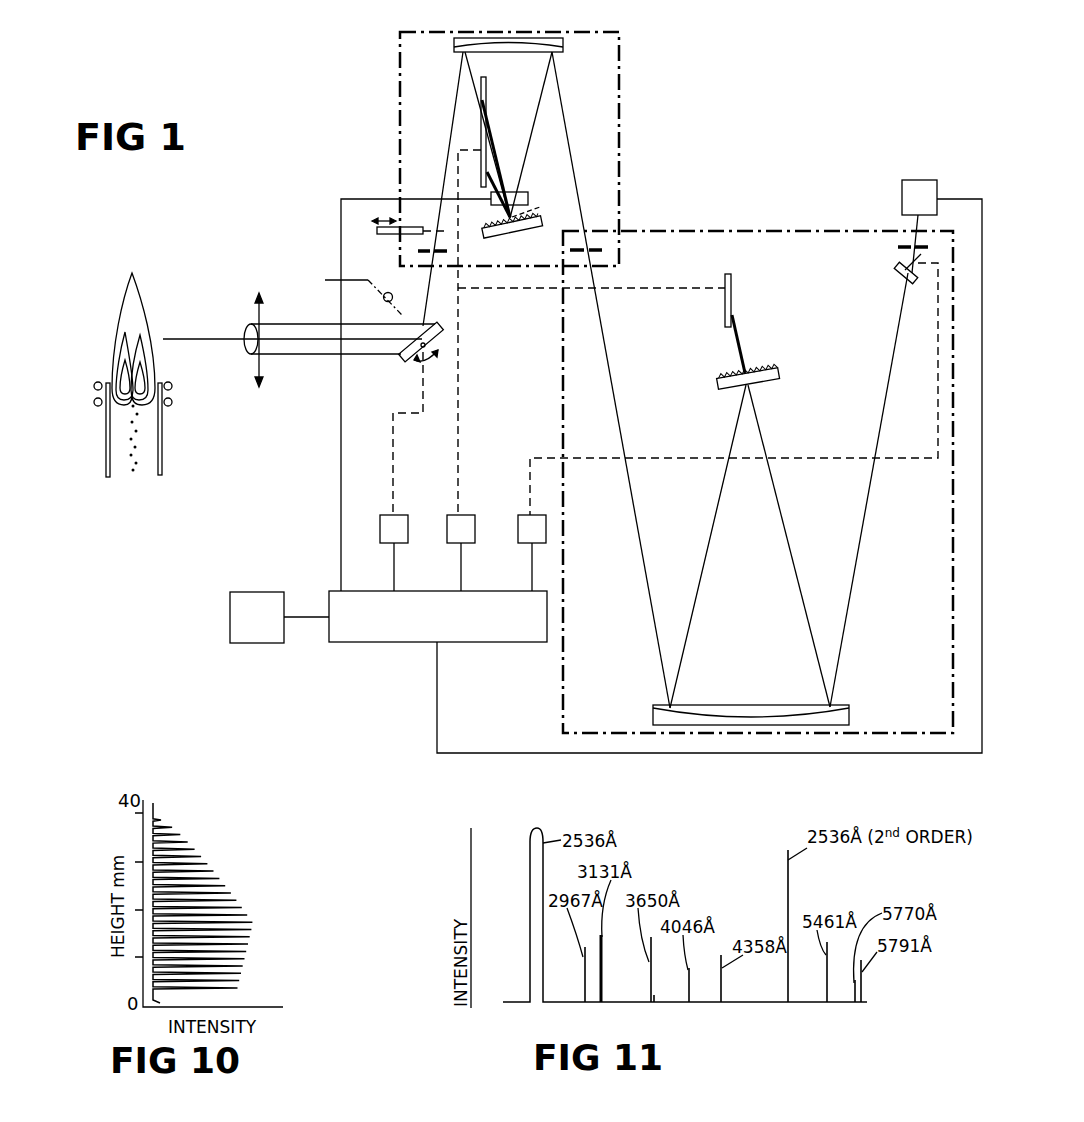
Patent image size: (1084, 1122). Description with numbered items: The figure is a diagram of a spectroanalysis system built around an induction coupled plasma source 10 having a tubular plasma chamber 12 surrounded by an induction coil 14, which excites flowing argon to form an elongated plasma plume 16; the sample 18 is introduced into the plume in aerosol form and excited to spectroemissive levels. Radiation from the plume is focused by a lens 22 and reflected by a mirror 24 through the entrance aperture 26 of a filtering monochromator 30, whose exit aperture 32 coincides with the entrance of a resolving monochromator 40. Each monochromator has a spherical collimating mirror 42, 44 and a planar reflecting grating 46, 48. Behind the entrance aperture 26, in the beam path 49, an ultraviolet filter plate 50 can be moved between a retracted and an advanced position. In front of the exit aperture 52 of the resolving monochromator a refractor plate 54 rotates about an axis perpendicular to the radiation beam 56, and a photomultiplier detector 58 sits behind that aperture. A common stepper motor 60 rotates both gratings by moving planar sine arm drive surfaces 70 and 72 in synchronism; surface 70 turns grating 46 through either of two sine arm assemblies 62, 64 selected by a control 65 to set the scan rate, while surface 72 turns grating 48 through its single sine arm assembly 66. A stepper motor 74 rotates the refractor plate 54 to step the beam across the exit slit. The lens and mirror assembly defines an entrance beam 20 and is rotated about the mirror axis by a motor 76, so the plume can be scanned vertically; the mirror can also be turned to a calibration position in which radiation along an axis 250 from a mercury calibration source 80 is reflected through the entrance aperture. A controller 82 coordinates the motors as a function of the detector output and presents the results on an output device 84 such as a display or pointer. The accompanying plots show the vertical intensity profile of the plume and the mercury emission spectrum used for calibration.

The induction coupled plasma source 10 is at (129, 399).
The tubular plasma chamber 12 is at (162, 448).
The induction coil 14 is at (172, 404).
The plasma plume 16 is at (120, 316).
The sample 18 is at (133, 472).
The entrance beam 20 is at (193, 339).
The lens 22 is at (256, 322).
The mirror 24 is at (403, 358).
The entrance aperture 26 is at (423, 250).
The filtering monochromator 30 is at (619, 127).
The exit aperture 32 is at (593, 250).
The resolving monochromator 40 is at (561, 670).
The spherical collimating mirror 42 is at (540, 38).
The spherical collimating mirror 44 is at (820, 722).
The dispersing element 46 is at (517, 226).
The dispersing element 48 is at (727, 375).
The beam path 49 is at (452, 118).
The ultraviolet filter plate 50 is at (420, 225).
The exit aperture 52 is at (910, 246).
The refractor plate 54 is at (895, 273).
The radiation beam 56 is at (888, 360).
The radiation detector 58 is at (937, 180).
The stepper motor 60 is at (459, 515).
The sine arm assembly 62 is at (493, 178).
The sine arm assembly 64 is at (493, 131).
The control 65 is at (528, 195).
The sine arm assembly 66 is at (740, 343).
The sine arm drive surface 70 is at (487, 87).
The sine arm drive surface 72 is at (731, 278).
The stepper motor 74 is at (529, 515).
The motor 76 is at (392, 515).
The mercury calibration source 80 is at (384, 300).
The controller 82 is at (378, 643).
The output device 84 is at (230, 621).
The axis 250 is at (329, 281).